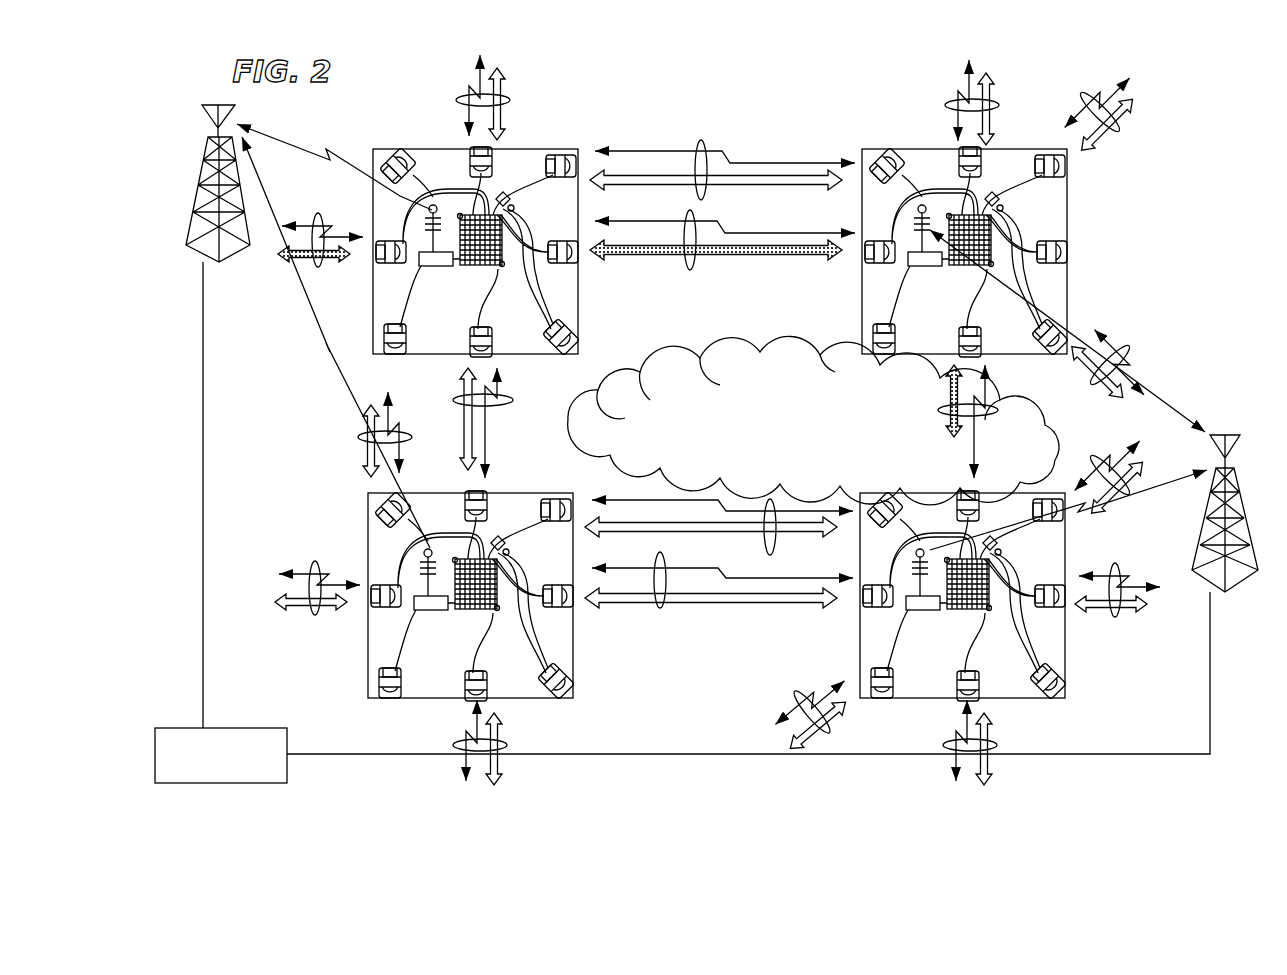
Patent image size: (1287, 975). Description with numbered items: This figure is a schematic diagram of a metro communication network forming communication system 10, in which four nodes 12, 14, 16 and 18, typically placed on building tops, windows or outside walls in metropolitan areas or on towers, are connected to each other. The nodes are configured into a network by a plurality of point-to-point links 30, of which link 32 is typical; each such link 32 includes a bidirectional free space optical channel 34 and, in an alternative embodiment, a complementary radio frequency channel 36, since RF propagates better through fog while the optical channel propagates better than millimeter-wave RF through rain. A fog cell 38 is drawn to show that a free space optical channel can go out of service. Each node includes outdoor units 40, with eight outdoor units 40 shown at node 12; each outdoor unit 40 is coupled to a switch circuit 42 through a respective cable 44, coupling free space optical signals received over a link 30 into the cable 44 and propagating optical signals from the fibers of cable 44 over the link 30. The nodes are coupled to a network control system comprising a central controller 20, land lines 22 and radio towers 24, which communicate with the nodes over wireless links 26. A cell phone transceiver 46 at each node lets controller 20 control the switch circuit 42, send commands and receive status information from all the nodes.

The communication system 10 is at (797, 120).
The node 12 is at (476, 232).
The node 14 is at (1018, 148).
The node 16 is at (368, 633).
The node 18 is at (1068, 654).
The central controller 20 is at (243, 728).
The land lines 22 is at (203, 421).
The radio towers 24 is at (201, 174).
The wireless links 26 is at (290, 144).
The point-to-point links 30 is at (455, 100).
The link 32 is at (935, 412).
The free space optical channel 34 is at (946, 440).
The radio frequency channel 36 is at (982, 446).
The fog cell 38 is at (764, 352).
The outdoor unit 40 is at (477, 252).
The switch circuit 42 is at (481, 257).
The cable 44 is at (509, 192).
The cell phone transceiver 46 is at (438, 252).